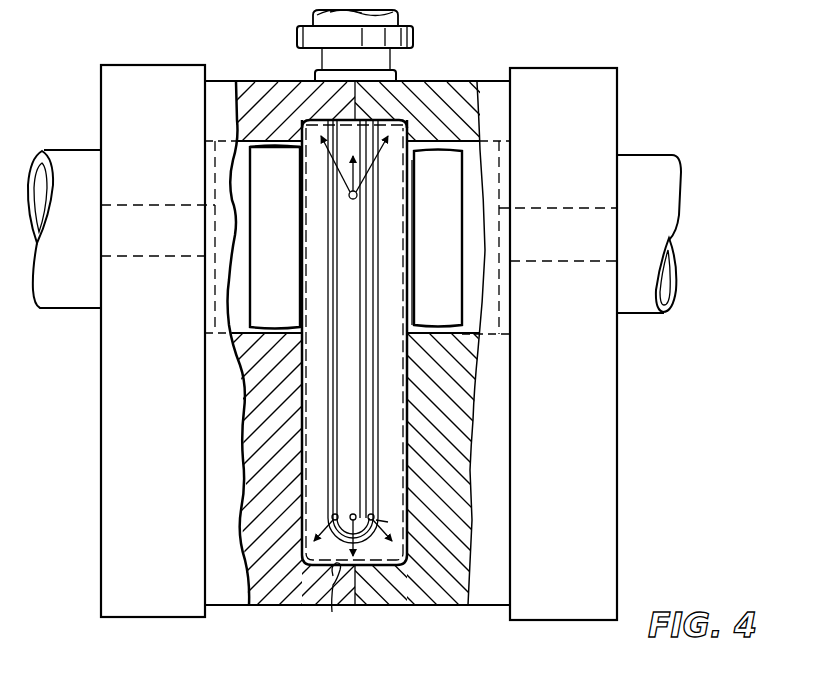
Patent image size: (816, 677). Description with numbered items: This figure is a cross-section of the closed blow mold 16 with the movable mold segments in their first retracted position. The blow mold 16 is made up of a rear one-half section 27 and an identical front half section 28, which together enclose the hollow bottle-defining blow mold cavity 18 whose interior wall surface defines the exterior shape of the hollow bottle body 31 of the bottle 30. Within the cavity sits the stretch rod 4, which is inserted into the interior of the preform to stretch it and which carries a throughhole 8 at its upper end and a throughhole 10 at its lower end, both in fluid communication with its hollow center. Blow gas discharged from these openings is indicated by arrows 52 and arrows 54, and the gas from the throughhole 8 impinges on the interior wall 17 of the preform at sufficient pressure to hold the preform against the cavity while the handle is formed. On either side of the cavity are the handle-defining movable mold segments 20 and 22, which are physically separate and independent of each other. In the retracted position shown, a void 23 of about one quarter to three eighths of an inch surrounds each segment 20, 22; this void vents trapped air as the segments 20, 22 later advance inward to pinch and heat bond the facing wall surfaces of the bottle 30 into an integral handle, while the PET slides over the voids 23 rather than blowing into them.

The stretch rod 4 is at (372, 382).
The throughhole 8 is at (353, 199).
The throughhole 10 is at (333, 514).
The blow mold 16 is at (78, 530).
The interior wall 17 is at (325, 236).
The blow mold cavity 18 is at (332, 612).
The movable mold segment 20 is at (263, 255).
The movable mold segment 22 is at (448, 290).
The void 23 is at (258, 147).
The rear one-half section 27 is at (424, 606).
The front half section 28 is at (262, 606).
The bottle 30 is at (415, 470).
The hollow bottle body 31 is at (410, 426).
The arrows 52 is at (395, 140).
The arrows 54 is at (384, 526).